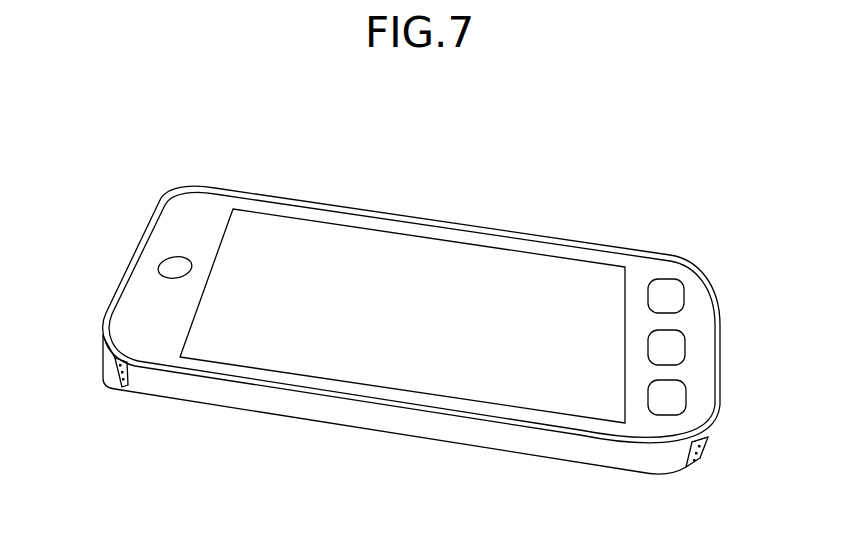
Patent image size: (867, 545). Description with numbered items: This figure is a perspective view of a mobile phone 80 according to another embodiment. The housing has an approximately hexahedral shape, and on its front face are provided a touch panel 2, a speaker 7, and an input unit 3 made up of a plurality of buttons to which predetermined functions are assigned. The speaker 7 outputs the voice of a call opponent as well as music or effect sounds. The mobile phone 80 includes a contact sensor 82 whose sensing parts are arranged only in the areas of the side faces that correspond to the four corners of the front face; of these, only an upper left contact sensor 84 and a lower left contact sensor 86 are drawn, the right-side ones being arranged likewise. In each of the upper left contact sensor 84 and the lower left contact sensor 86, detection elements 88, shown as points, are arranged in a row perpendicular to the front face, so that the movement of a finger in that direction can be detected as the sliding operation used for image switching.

The mobile phone 80 is at (475, 155).
The touch panel 2 is at (493, 263).
The speaker 7 is at (158, 264).
The input unit 3 is at (687, 344).
The contact sensor 82 is at (91, 425).
The upper left contact sensor 84 is at (110, 368).
The lower left contact sensor 86 is at (705, 447).
The detection elements 88 is at (118, 389).